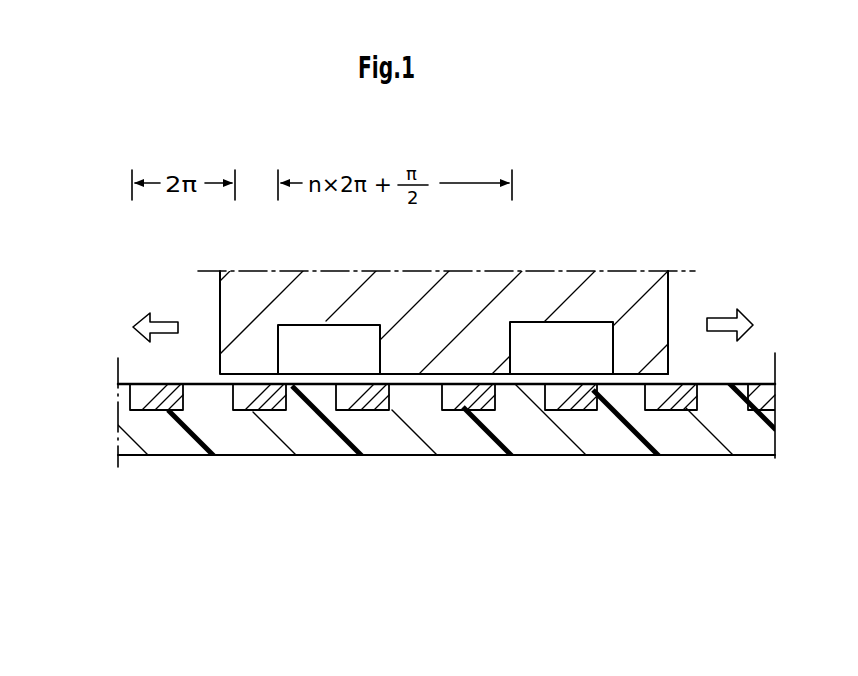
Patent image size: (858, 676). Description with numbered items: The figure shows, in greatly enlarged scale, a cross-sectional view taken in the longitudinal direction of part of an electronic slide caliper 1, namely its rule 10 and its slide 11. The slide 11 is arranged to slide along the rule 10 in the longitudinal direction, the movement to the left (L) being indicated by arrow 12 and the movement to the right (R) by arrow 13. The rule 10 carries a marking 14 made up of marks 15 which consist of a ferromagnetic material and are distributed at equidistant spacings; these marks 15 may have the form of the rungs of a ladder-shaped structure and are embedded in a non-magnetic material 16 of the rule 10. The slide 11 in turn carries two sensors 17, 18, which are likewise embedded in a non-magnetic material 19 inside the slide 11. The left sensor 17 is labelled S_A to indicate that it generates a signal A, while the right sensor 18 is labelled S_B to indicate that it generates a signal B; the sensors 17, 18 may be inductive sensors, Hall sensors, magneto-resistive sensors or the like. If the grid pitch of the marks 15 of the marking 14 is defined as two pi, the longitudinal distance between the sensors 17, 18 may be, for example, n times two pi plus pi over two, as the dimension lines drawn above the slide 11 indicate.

The slide caliper 1 is at (441, 368).
The rule 10 is at (433, 419).
The slide 11 is at (434, 291).
The arrow 12 is at (178, 334).
The arrow 13 is at (722, 331).
The marking 14 is at (433, 360).
The marks 15 is at (252, 411).
The non-magnetic material 16 is at (207, 420).
The sensor 17 is at (316, 326).
The sensor 18 is at (527, 330).
The non-magnetic material 19 is at (658, 298).